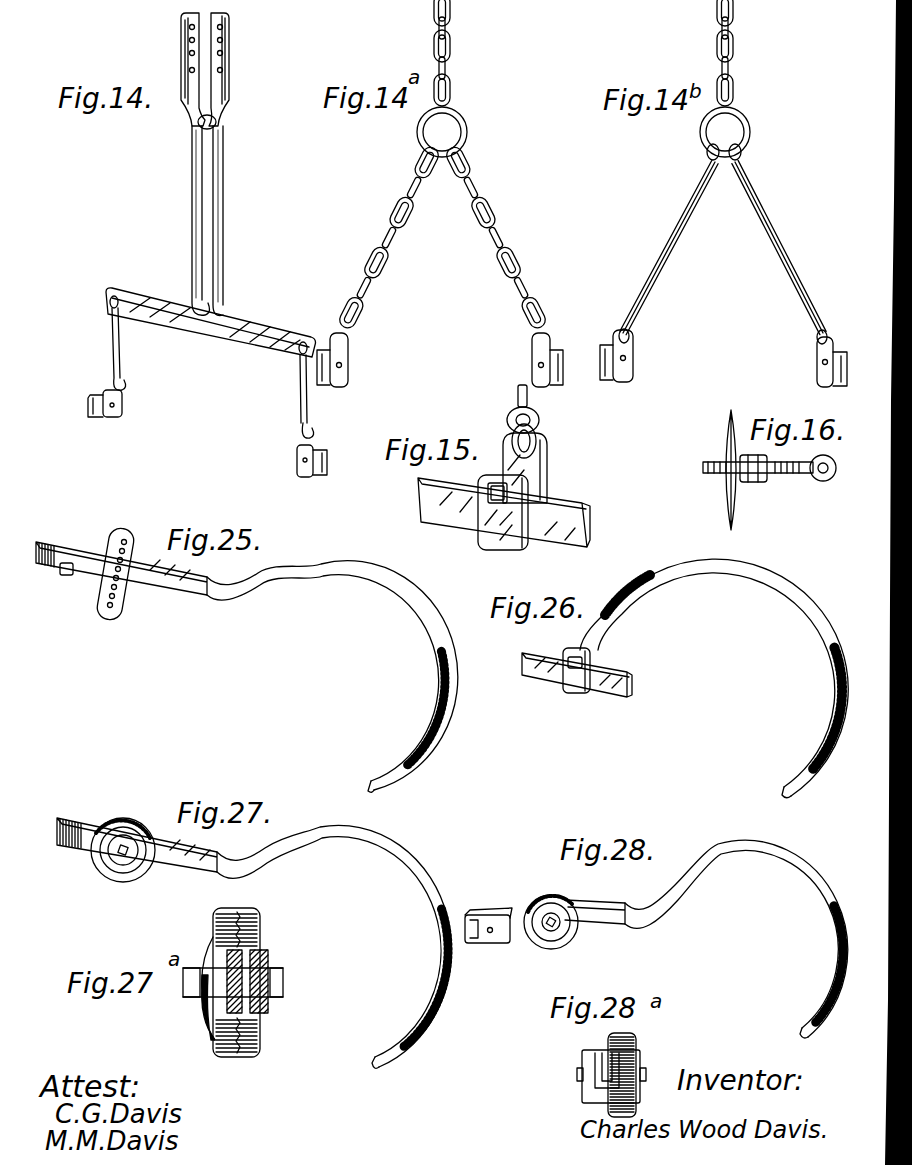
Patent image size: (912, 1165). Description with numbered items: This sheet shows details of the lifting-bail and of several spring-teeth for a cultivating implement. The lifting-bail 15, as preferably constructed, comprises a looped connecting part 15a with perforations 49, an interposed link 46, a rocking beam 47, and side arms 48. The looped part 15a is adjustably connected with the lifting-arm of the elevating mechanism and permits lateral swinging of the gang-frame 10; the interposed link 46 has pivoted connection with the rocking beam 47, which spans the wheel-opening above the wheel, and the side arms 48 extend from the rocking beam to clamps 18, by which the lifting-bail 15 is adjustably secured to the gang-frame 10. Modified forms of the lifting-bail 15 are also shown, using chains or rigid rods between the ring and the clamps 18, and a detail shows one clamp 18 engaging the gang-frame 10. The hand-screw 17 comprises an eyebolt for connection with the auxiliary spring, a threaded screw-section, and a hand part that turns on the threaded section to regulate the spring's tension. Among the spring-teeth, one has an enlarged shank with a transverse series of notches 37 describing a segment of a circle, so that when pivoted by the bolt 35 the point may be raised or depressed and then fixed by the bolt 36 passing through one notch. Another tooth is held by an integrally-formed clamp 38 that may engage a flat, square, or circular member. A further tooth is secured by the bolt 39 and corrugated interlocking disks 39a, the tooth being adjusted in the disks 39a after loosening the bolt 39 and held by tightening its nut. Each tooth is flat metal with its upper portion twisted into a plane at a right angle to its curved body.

In FIG. 14, the perforations 49 is at (187, 60).
In FIG. 14, the looped connecting part 15a is at (230, 58).
In FIG. 14, the interposed link 46 is at (223, 190).
In FIG. 14, the rocking beam 47 is at (258, 330).
In FIG. 14, the side arms 48 is at (118, 357).
In FIG. 14, the clamps 18 is at (122, 403).
In FIG. 14A, the clamps 18 is at (348, 373).
In FIG. 14B, the clamps 18 is at (632, 370).
In FIG. 15, the clamps 18 is at (547, 487).
In FIG. 14A, the lifting-bail 15 is at (392, 255).
In FIG. 14B, the lifting-bail 15 is at (742, 263).
In FIG. 15, the lifting-bail 15 is at (527, 400).
In FIG. 15, the gang-frame 10 is at (563, 543).
In FIG. 16, the hand-screw 17 is at (752, 480).
In FIG. 25, the bolt 35 is at (67, 574).
In FIG. 25, the bolt 36 is at (118, 580).
In FIG. 25, the notches 37 is at (118, 600).
In FIG. 26, the clamp 38 is at (573, 690).
In FIG. 27, the bolt 39 is at (117, 855).
In FIG. 27, the corrugated interlocking disks 39a is at (122, 878).
In FIG. 27A, the corrugated interlocking disks 39a is at (220, 1053).